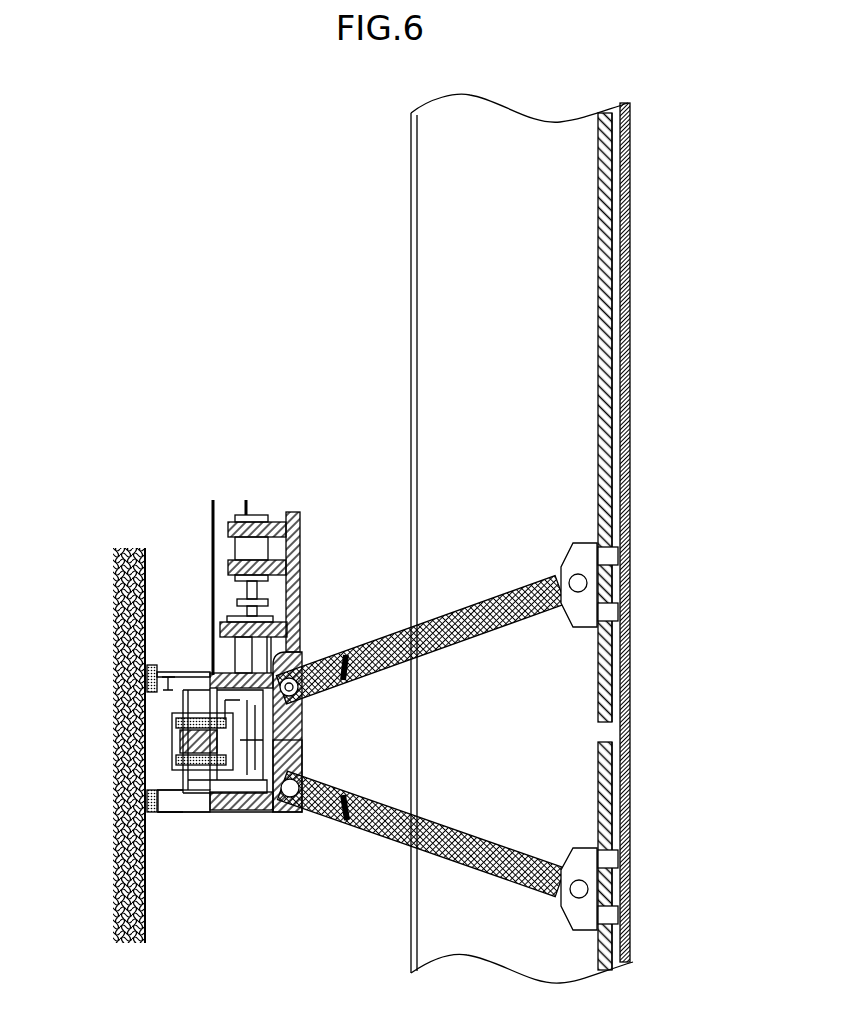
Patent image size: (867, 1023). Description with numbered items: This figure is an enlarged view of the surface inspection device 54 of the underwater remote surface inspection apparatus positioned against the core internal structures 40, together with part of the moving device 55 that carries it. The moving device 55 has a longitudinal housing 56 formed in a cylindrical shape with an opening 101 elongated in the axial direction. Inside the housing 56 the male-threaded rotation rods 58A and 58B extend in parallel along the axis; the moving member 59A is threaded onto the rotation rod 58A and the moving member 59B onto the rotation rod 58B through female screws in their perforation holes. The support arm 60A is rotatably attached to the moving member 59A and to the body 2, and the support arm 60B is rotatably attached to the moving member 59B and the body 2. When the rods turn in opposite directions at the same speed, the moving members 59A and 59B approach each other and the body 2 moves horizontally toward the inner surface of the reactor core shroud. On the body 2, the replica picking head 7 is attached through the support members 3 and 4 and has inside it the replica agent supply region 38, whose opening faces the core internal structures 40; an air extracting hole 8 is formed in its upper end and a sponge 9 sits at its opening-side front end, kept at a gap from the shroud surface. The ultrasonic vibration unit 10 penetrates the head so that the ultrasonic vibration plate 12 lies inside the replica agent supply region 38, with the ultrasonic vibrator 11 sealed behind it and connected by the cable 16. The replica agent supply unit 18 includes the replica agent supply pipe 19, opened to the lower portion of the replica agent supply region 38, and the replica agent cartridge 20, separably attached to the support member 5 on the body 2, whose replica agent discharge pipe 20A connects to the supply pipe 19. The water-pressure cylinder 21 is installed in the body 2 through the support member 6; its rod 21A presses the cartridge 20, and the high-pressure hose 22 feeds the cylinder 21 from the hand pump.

The opening 101 is at (411, 190).
The moving device 55 is at (632, 267).
The longitudinal housing 56 is at (632, 697).
The rotation rod 58A is at (600, 344).
The rotation rod 58B is at (612, 787).
The moving member 59A is at (568, 556).
The moving member 59B is at (568, 850).
The support arm 60A is at (480, 585).
The support arm 60B is at (480, 832).
The replica agent cartridge 20 is at (303, 712).
The replica agent discharge pipe 20A is at (303, 758).
The support member 4 is at (300, 660).
The body 2 is at (300, 588).
The high-pressure hose 22 is at (248, 500).
The water-pressure cylinder 21 is at (290, 536).
The rod 21A is at (232, 545).
The support member 6 is at (285, 564).
The support member 5 is at (222, 630).
The surface inspection device 54 is at (287, 617).
The cable 16 is at (212, 500).
The core internal structures 40 is at (118, 571).
The replica agent supply unit 18 is at (215, 673).
The air extracting hole 8 is at (150, 665).
The ultrasonic vibrator 11 is at (160, 698).
The ultrasonic vibration unit 10 is at (175, 755).
The ultrasonic vibration plate 12 is at (185, 732).
The replica agent supply region 38 is at (150, 793).
The sponge 9 is at (152, 815).
The replica picking head 7 is at (190, 815).
The replica agent supply pipe 19 is at (225, 812).
The support member 3 is at (262, 812).